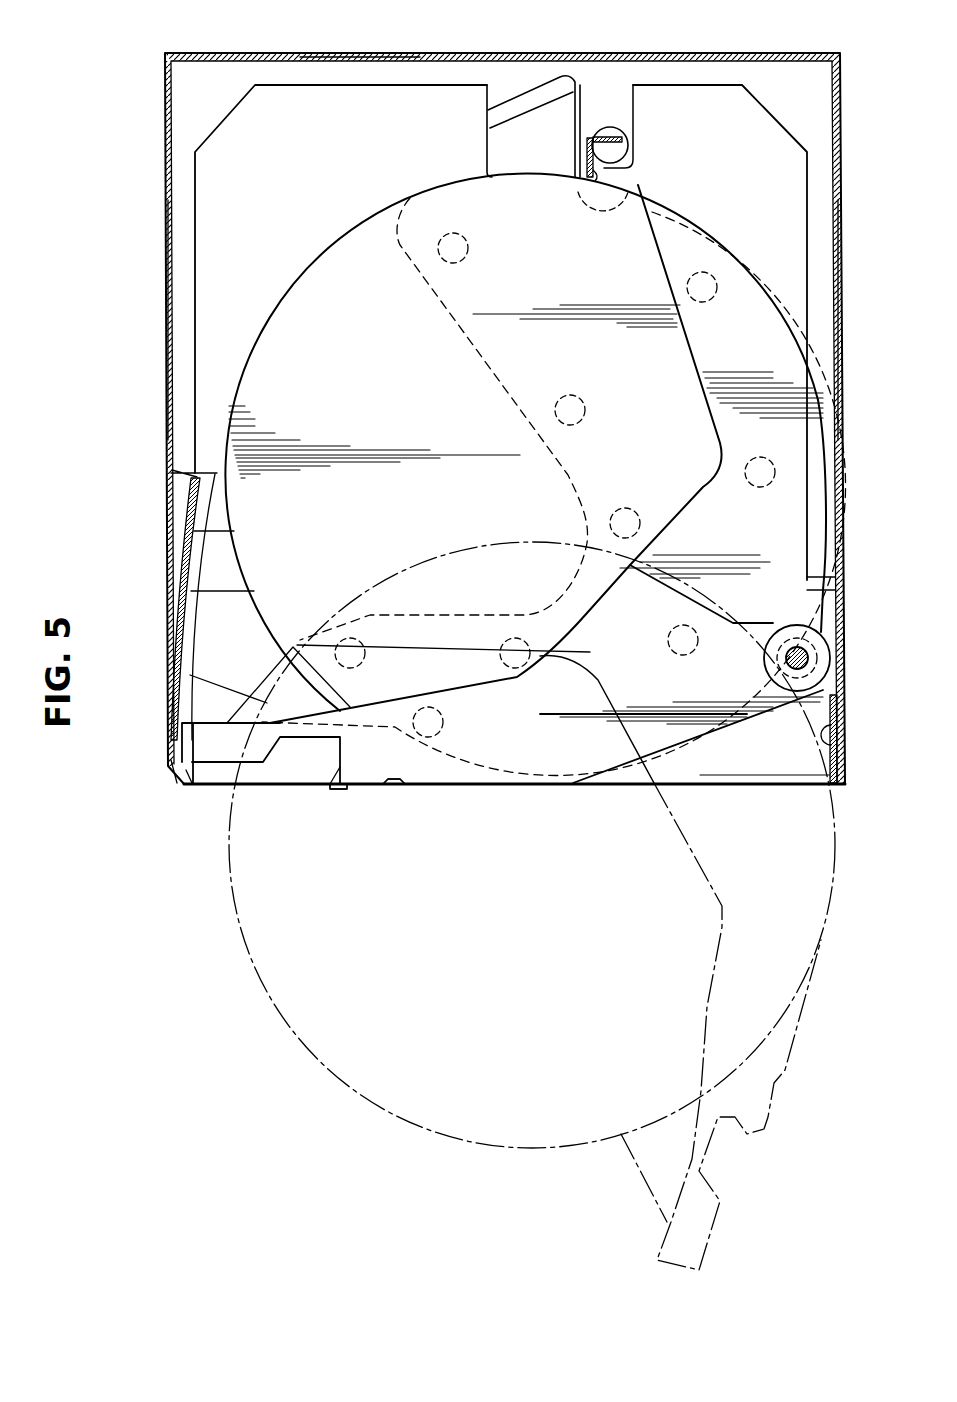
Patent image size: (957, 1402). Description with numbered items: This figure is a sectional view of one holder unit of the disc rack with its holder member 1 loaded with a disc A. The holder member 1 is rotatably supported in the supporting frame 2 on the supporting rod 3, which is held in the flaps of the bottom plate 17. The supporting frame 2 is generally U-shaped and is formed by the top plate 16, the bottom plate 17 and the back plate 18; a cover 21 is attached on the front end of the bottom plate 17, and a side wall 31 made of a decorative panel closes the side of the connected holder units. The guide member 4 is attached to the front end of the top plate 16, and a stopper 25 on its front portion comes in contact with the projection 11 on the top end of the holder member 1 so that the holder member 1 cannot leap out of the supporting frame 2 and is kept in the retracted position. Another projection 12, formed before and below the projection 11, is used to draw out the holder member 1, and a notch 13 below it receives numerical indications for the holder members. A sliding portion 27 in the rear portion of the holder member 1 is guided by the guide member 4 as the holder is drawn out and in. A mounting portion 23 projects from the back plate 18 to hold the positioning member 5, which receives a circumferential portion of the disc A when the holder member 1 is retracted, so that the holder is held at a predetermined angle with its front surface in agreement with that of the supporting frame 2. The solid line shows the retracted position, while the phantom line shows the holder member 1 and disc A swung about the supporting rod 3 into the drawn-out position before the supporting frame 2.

The holder member 1 is at (814, 365).
The supporting frame 2 is at (160, 158).
The supporting rod 3 is at (808, 665).
The guide member 4 is at (184, 514).
The positioning member 5 is at (585, 157).
The projection 11 is at (182, 730).
The projection 12 is at (342, 789).
The notch 13 is at (398, 787).
The top plate 16 is at (165, 318).
The bottom plate 17 is at (833, 270).
The back plate 18 is at (357, 52).
The cover 21 is at (840, 720).
The mounting portion 23 is at (615, 125).
The stopper 25 is at (180, 785).
The sliding portion 27 is at (500, 137).
The side wall 31 is at (795, 770).
The disc A is at (300, 258).